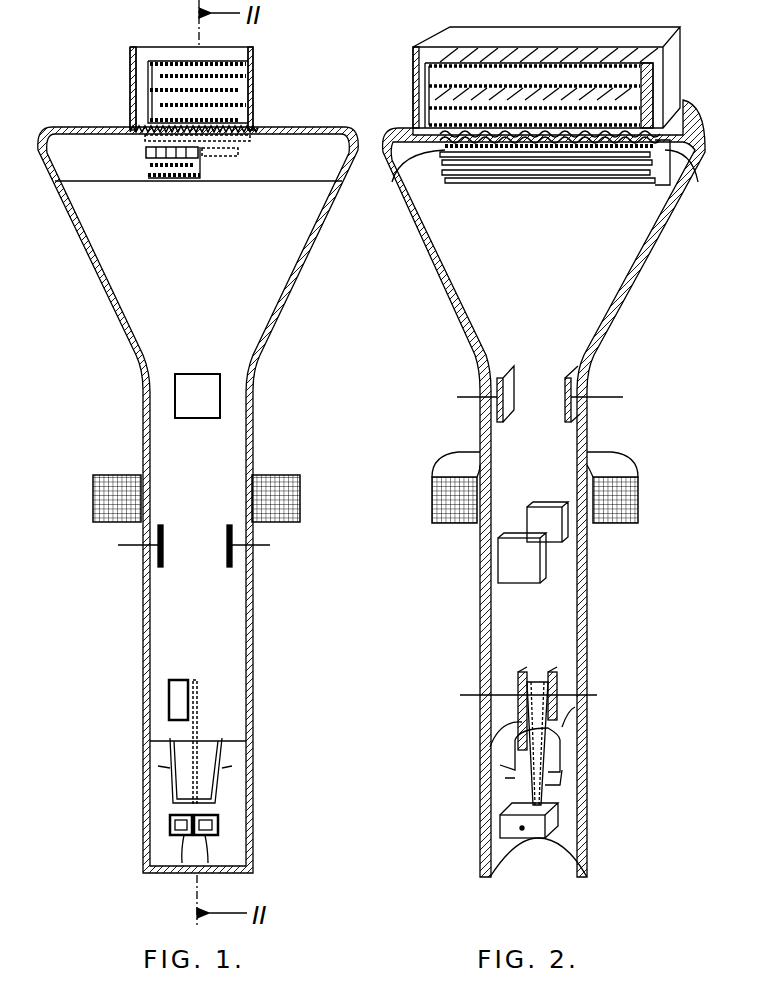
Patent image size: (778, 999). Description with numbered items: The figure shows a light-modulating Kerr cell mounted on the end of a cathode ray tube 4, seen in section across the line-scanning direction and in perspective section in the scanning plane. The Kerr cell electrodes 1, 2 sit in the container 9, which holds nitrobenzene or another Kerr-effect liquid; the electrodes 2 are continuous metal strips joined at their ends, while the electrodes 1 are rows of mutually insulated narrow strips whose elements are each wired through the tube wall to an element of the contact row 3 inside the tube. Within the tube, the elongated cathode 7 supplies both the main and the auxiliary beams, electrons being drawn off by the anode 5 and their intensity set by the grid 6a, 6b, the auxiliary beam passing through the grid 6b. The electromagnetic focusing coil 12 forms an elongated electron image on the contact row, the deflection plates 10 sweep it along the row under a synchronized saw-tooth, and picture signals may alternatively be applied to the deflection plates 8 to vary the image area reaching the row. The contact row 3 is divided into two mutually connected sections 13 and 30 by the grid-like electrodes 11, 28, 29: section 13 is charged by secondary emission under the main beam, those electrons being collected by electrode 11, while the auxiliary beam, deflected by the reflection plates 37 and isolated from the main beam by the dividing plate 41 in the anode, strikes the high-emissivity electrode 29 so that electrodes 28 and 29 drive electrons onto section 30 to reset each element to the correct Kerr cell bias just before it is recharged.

In FIG. 1, the electrodes 1 is at (178, 64).
In FIG. 2, the electrodes 1 is at (530, 95).
In FIG. 1, the electrodes 2 is at (232, 105).
In FIG. 2, the electrodes 2 is at (445, 95).
In FIG. 1, the contact row 3 is at (255, 138).
In FIG. 2, the contact row 3 is at (518, 142).
In FIG. 1, the envelope / funnel body 4 is at (306, 286).
In FIG. 2, the envelope / funnel body 4 is at (428, 268).
In FIG. 1, the anode 5 is at (205, 762).
In FIG. 2, the anode 5 is at (560, 775).
In FIG. 1, the grid 6a is at (205, 828).
In FIG. 1, the grid 6b is at (172, 823).
In FIG. 2, the grid 6b is at (560, 815).
In FIG. 1, the cathode 7 is at (176, 833).
In FIG. 2, the cathode 7 is at (540, 840).
In FIG. 1, the electrostatic deflection plates 8 is at (157, 548).
In FIG. 2, the electrostatic deflection plates 8 is at (512, 557).
In FIG. 1, the container 9 is at (253, 55).
In FIG. 2, the container 9 is at (413, 92).
In FIG. 1, the electrostatic deflection plates 10 is at (210, 403).
In FIG. 2, the electrostatic deflection plates 10 is at (497, 385).
In FIG. 1, the electrode 11 is at (185, 180).
In FIG. 2, the electrode 11 is at (615, 185).
In FIG. 1, the electromagnetic focusing coil 12 is at (278, 477).
In FIG. 2, the electromagnetic focusing coil 12 is at (462, 466).
In FIG. 1, the section of the contact row 13 is at (222, 140).
In FIG. 1, the electrode 28 is at (160, 168).
In FIG. 2, the electrode 28 is at (575, 170).
In FIG. 1, the electrode 29 is at (150, 158).
In FIG. 2, the electrode 29 is at (545, 148).
In FIG. 1, the section of the contact row 30 is at (150, 140).
In FIG. 1, the reflection plates 37 is at (176, 700).
In FIG. 2, the reflection plates 37 is at (520, 673).
In FIG. 1, the dividing plate 41 is at (197, 718).
In FIG. 2, the dividing plate 41 is at (527, 700).